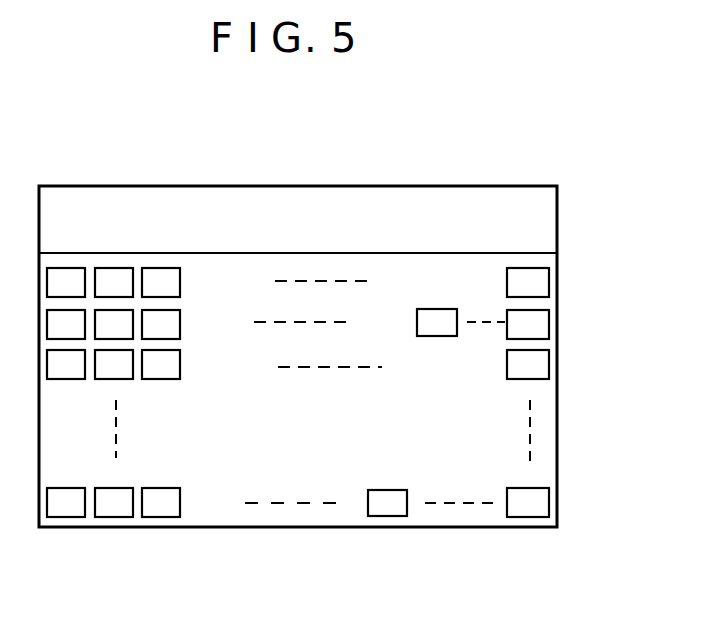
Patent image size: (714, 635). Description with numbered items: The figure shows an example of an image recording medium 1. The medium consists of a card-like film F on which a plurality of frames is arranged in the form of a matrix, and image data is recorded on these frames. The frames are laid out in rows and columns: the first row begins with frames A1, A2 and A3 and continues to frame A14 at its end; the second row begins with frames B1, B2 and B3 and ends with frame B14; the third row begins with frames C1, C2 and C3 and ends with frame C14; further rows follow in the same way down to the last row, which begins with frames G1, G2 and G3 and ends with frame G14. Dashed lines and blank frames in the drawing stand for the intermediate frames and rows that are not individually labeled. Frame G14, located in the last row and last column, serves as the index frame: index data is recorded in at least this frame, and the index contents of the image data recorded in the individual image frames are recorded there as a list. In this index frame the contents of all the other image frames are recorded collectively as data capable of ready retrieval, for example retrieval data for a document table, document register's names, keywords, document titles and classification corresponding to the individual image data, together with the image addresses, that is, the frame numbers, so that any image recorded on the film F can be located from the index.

The image recording medium 1 is at (484, 183).
The card-like film F is at (557, 218).
The frame A1 is at (66, 282).
The frame A2 is at (114, 282).
The frame A3 is at (161, 282).
The frame A14 is at (528, 282).
The frame B1 is at (66, 324).
The frame B2 is at (114, 324).
The frame B3 is at (161, 324).
The frame B14 is at (528, 324).
The frame C1 is at (66, 364).
The frame C2 is at (114, 364).
The frame C3 is at (161, 364).
The frame C14 is at (528, 364).
The frame G1 is at (66, 502).
The frame G2 is at (114, 502).
The frame G3 is at (161, 502).
The index frame G14 is at (528, 502).